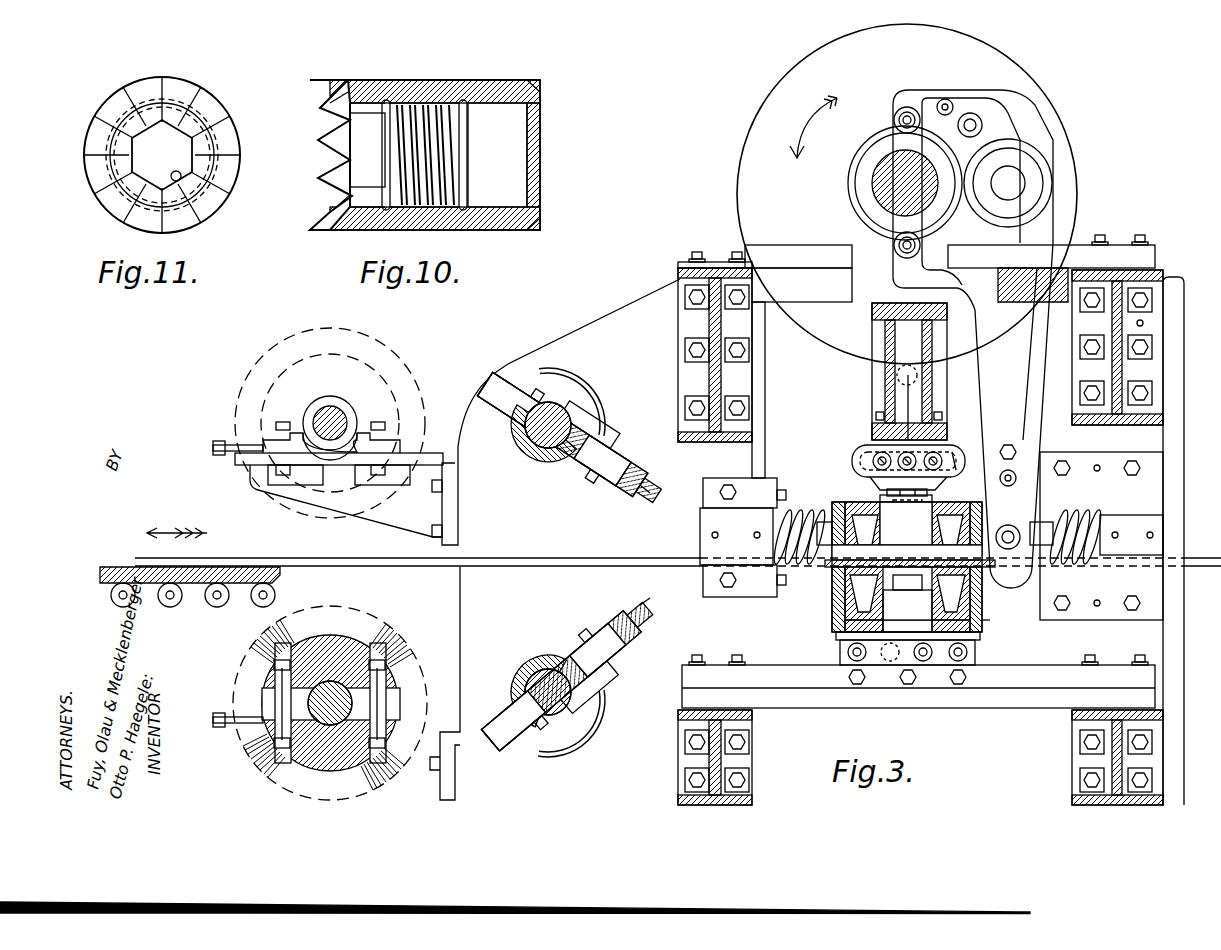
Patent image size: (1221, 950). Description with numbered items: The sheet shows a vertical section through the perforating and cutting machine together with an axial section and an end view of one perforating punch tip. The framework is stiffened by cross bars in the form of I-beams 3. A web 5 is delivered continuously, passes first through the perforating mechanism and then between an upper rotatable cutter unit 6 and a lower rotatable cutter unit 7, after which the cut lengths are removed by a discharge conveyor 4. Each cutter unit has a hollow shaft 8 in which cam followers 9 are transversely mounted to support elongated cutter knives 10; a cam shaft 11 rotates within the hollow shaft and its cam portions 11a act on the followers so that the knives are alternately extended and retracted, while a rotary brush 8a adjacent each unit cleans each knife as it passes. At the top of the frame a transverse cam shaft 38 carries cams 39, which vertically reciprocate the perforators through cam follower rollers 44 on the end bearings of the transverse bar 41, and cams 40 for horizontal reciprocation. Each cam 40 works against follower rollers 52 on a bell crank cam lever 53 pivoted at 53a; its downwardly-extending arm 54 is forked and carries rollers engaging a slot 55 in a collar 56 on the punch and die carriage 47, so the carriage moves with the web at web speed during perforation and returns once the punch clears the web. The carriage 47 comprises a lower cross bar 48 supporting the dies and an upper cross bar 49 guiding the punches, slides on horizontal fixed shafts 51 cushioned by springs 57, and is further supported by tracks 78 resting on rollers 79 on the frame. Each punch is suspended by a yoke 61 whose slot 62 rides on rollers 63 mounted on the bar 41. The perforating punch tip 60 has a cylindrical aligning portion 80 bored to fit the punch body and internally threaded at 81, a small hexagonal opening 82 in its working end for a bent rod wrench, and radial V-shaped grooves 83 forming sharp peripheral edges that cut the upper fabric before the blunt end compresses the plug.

In FIG. 3, the I-beams 3 is at (682, 296).
In FIG. 3, the discharge conveyor 4 is at (192, 583).
In FIG. 3, the web 5 is at (230, 558).
In FIG. 3, the upper rotatable cutter unit 6 is at (586, 376).
In FIG. 3, the lower rotatable cutter unit 7 is at (602, 737).
In FIG. 3, the hollow shaft 8 is at (912, 405).
In FIG. 3, the rotary brush 8a is at (253, 372).
In FIG. 3, the cam followers 9 is at (588, 468).
In FIG. 3, the cutter knives 10 is at (632, 500).
In FIG. 3, the cam shaft 11 is at (516, 430).
In FIG. 3, the cam portions 11a is at (528, 447).
In FIG. 3, the transverse cam shaft 38 is at (872, 183).
In FIG. 3, the cams 39 is at (992, 58).
In FIG. 3, the cams 40 is at (962, 160).
In FIG. 3, the transverse bar 41 is at (900, 395).
In FIG. 3, the cam follower rollers 44 is at (897, 373).
In FIG. 3, the punch and die carriage 47 is at (985, 630).
In FIG. 3, the lower cross bar 48 is at (832, 600).
In FIG. 3, the upper cross bar 49 is at (880, 505).
In FIG. 3, the horizontal fixed shafts 51 is at (818, 520).
In FIG. 3, the follower rollers 52 is at (894, 121).
In FIG. 3, the bell crank cam lever 53 is at (1036, 150).
In FIG. 3, the pivot 53a is at (1010, 183).
In FIG. 3, the downwardly-extending arm 54 is at (893, 242).
In FIG. 3, the slot 55 is at (1007, 560).
In FIG. 3, the collar 56 is at (992, 617).
In FIG. 3, the springs 57 is at (790, 570).
In FIG. 11, the perforating punch tip 60 is at (183, 74).
In FIG. 10, the perforating punch tip 60 is at (488, 72).
In FIG. 3, the yoke 61 is at (862, 447).
In FIG. 3, the slot 62 is at (868, 462).
In FIG. 3, the rollers 63 is at (950, 448).
In FIG. 3, the tracks 78 is at (836, 636).
In FIG. 3, the rollers 79 is at (840, 655).
In FIG. 10, the cylindrical aligning portion 80 is at (505, 135).
In FIG. 10, the internal thread 81 is at (438, 115).
In FIG. 11, the hexagonal opening 82 is at (182, 181).
In FIG. 10, the hexagonal opening 82 is at (370, 148).
In FIG. 11, the radial V-shaped grooves 83 is at (222, 163).
In FIG. 10, the radial V-shaped grooves 83 is at (365, 137).